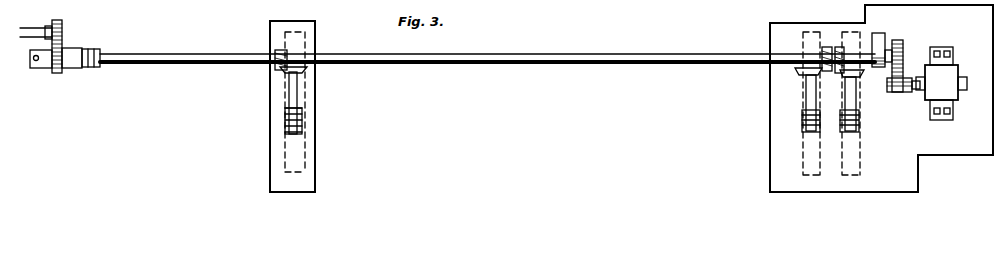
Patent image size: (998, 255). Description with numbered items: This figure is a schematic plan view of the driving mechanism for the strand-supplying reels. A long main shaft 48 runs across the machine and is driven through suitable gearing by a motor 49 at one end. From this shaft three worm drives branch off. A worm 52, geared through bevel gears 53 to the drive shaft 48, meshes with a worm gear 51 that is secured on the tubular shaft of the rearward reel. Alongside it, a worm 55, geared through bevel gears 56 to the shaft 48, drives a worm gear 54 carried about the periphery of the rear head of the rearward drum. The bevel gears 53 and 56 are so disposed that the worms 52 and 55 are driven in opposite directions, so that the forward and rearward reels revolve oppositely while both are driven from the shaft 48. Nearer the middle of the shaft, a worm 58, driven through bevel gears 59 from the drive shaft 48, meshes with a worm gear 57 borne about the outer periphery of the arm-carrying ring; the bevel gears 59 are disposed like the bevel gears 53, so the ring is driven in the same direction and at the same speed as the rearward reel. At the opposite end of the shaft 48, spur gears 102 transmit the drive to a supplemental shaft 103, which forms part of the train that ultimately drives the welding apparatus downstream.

The main shaft 48 is at (518, 58).
The motor 49 is at (945, 75).
The worm gear 51 is at (860, 166).
The worm 52 is at (860, 125).
The bevel gears 53 is at (845, 55).
The worm gear 54 is at (808, 161).
The worm 55 is at (805, 119).
The bevel gears 56 is at (797, 71).
The worm gear 57 is at (306, 138).
The worm 58 is at (299, 116).
The bevel gears 59 is at (293, 61).
The spur gears 102 is at (62, 38).
The supplemental shaft 103 is at (34, 30).